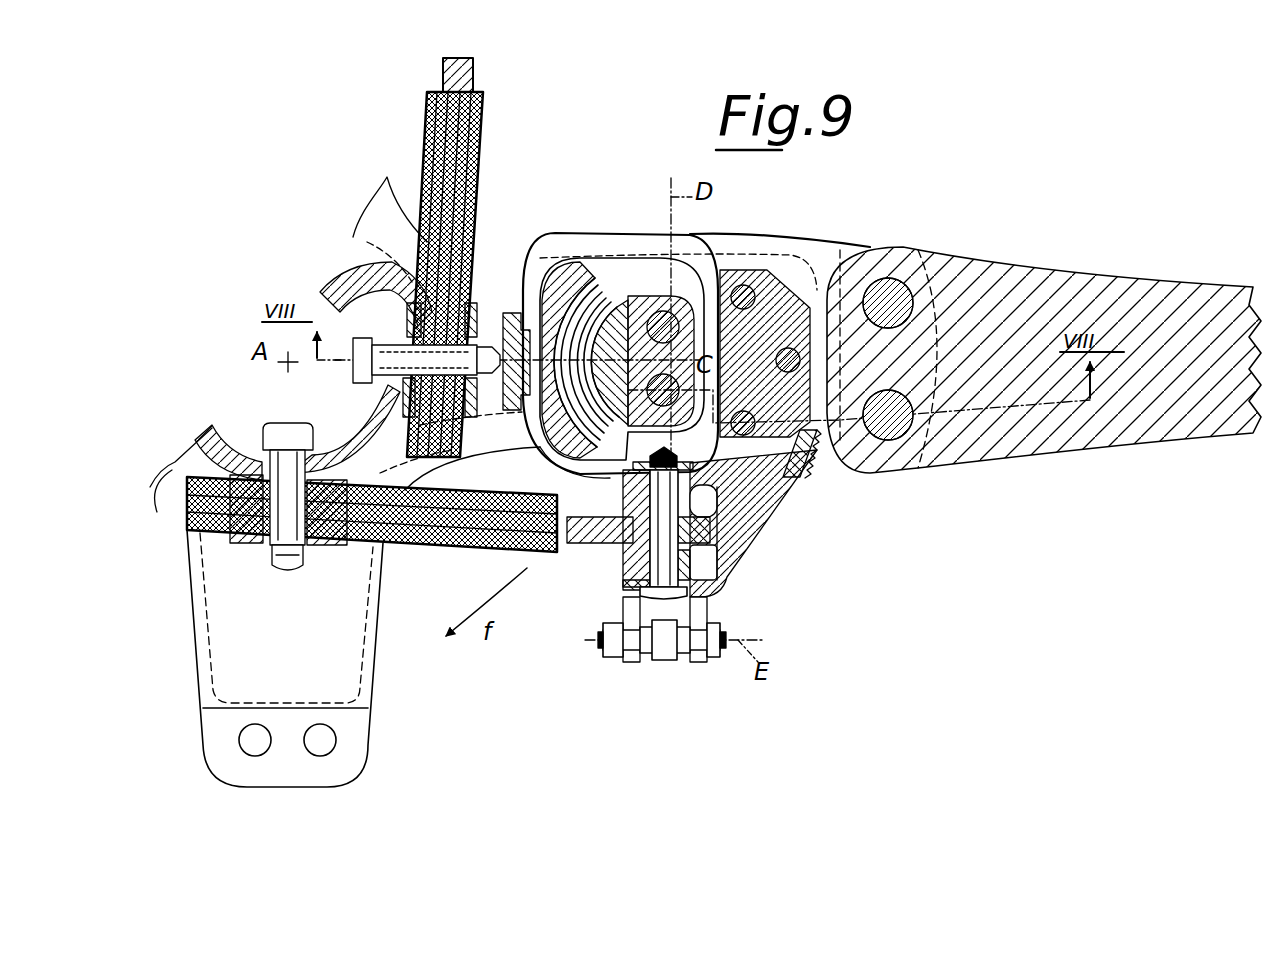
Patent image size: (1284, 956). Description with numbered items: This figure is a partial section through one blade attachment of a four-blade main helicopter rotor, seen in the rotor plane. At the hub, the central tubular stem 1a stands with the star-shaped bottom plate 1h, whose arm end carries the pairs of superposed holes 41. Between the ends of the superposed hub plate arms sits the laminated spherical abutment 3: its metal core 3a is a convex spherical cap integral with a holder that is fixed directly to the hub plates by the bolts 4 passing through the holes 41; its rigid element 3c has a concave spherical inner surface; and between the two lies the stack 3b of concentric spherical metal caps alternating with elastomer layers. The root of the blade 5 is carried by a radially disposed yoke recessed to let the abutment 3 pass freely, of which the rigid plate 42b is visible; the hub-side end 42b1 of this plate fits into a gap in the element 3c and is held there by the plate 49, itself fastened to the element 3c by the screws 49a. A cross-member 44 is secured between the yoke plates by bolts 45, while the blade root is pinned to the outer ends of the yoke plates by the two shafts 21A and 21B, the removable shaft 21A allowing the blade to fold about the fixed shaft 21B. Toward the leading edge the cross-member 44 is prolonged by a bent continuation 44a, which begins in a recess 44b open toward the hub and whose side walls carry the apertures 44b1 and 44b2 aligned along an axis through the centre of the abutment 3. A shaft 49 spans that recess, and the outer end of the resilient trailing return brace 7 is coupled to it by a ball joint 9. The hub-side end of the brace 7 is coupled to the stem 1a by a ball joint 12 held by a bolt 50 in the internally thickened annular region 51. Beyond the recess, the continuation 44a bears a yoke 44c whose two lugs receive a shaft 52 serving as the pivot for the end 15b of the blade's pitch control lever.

The resilient trailing return brace 7 is at (421, 153).
The central tubular stem 1a is at (368, 243).
The bottom plate 1h is at (170, 488).
The annular region 51 is at (233, 440).
The bolt 50 is at (290, 428).
The ball joint 12 is at (272, 562).
The holes 41 is at (322, 735).
The plate / shaft 49 is at (506, 405).
The screws 49a is at (505, 342).
The rigid yoke plate 42b is at (815, 236).
The end of plate 42b nearer hub 42b1 is at (547, 273).
The laminated spherical abutment 3 is at (612, 288).
The metal core 3a is at (653, 297).
The stack of rigid metal caps and elastomer layers 3b is at (610, 452).
The rigid element 3c is at (560, 262).
The bolts 4 is at (690, 265).
The bolts 45 is at (753, 275).
The cross-member 44 is at (772, 504).
The bent continuation 44a is at (702, 590).
The recess 44b is at (633, 558).
The aperture 44b1 is at (740, 540).
The aperture 44b2 is at (636, 590).
The yoke 44c is at (700, 662).
The ball joint 9 is at (718, 554).
The rotor blade 5 is at (1197, 340).
The shaft 21A is at (893, 418).
The shaft 21B is at (892, 293).
The end of pitch control lever 15b is at (658, 660).
The shaft 52 is at (720, 650).